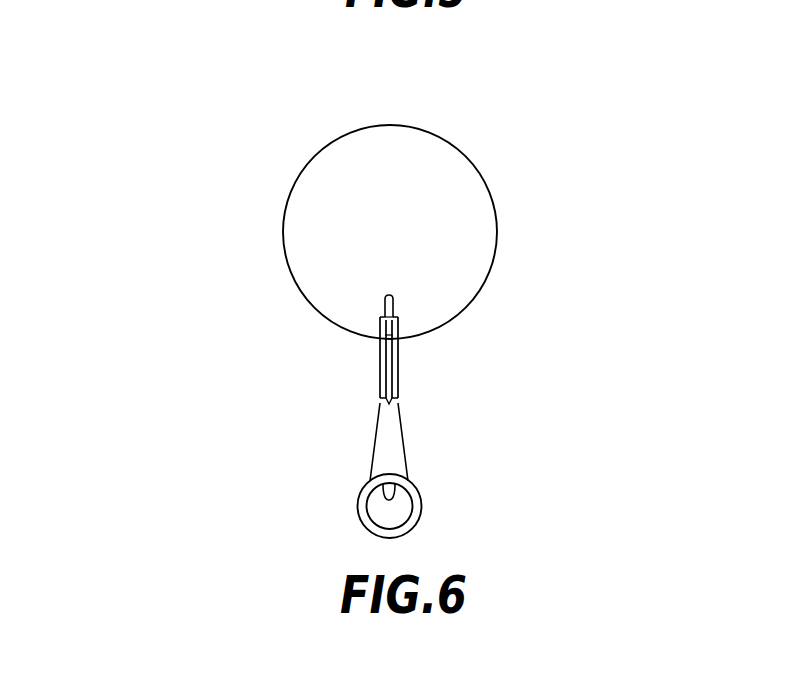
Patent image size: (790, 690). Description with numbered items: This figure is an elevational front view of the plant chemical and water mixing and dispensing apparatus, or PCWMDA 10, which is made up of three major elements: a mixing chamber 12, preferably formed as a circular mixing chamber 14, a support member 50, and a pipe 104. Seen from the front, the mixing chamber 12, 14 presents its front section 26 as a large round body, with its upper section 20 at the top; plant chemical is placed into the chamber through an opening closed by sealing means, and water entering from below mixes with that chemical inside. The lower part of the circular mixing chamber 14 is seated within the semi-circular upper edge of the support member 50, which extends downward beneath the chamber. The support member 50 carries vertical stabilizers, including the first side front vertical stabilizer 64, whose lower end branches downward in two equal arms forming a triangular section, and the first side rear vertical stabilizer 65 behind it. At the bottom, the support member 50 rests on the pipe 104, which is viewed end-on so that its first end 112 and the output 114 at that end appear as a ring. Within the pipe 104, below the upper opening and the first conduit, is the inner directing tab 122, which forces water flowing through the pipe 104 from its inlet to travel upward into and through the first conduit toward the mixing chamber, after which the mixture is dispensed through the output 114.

The plant chemical and water mixing and dispensing apparatus (PCWMDA) 10 is at (363, 291).
The mixing chamber 12 is at (597, 160).
The circular mixing chamber 14 is at (597, 160).
The upper section 20 is at (400, 124).
The front section 26 is at (312, 231).
The support member 50 is at (582, 370).
The first side front vertical stabilizer 64 is at (380, 384).
The first side rear vertical stabilizer 65 is at (399, 370).
The pipe 104 is at (521, 551).
The first end 112 is at (367, 498).
The output 114 is at (358, 524).
The inner directing tab 122 is at (398, 494).